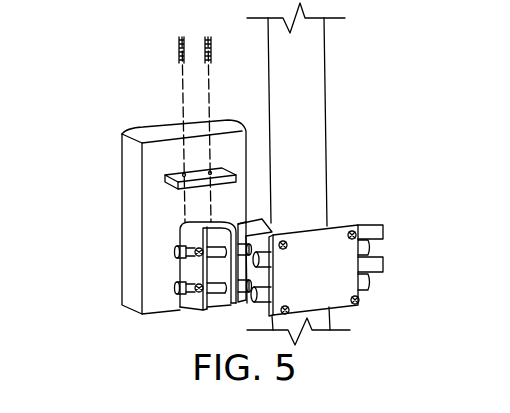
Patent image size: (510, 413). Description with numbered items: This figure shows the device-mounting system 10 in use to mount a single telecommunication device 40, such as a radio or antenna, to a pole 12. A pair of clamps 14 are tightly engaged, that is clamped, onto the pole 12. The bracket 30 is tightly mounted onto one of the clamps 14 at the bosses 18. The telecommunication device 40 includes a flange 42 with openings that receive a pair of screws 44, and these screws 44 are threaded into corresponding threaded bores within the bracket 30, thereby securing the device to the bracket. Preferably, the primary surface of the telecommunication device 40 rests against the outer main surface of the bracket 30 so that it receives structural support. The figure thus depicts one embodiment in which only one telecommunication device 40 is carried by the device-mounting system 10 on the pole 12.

The device-mounting system 10 is at (202, 311).
The pole 12 is at (302, 80).
The clamps 14 is at (322, 247).
The bosses 18 is at (262, 235).
The bracket 30 is at (202, 302).
The telecommunication device 40 is at (142, 136).
The flange 42 is at (181, 175).
The screws 44 is at (178, 50).